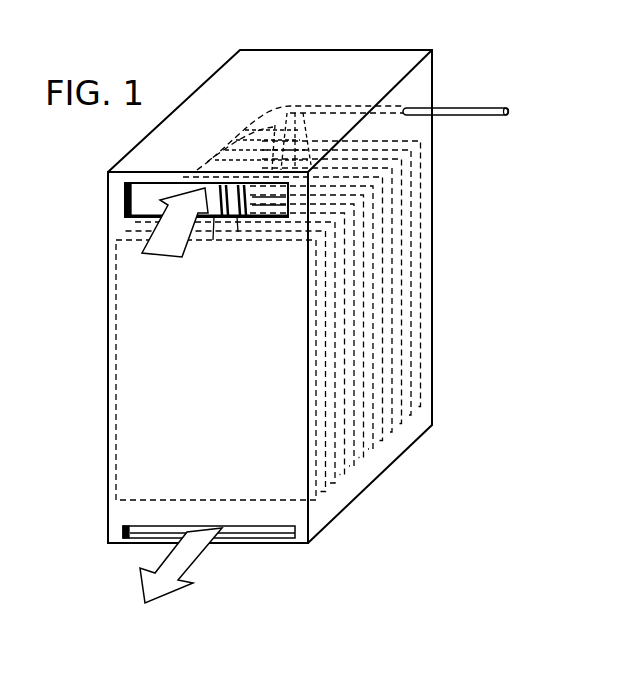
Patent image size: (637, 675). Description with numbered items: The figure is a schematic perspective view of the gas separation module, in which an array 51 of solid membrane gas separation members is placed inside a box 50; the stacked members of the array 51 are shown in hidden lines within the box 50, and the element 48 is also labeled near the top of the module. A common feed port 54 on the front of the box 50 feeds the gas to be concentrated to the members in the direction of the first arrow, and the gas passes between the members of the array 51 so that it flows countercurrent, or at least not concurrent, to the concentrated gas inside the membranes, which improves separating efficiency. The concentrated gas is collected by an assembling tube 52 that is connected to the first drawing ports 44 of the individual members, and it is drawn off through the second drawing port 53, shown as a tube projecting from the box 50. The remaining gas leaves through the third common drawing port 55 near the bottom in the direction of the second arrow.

The first drawing ports 44 is at (236, 233).
The cell stack 48 is at (340, 4).
The box 50 is at (256, 62).
The array 51 is at (116, 396).
The assembling tube 52 is at (302, 108).
The second drawing port 53 is at (480, 108).
The common feed port 54 is at (137, 200).
The third common drawing port 55 is at (142, 537).